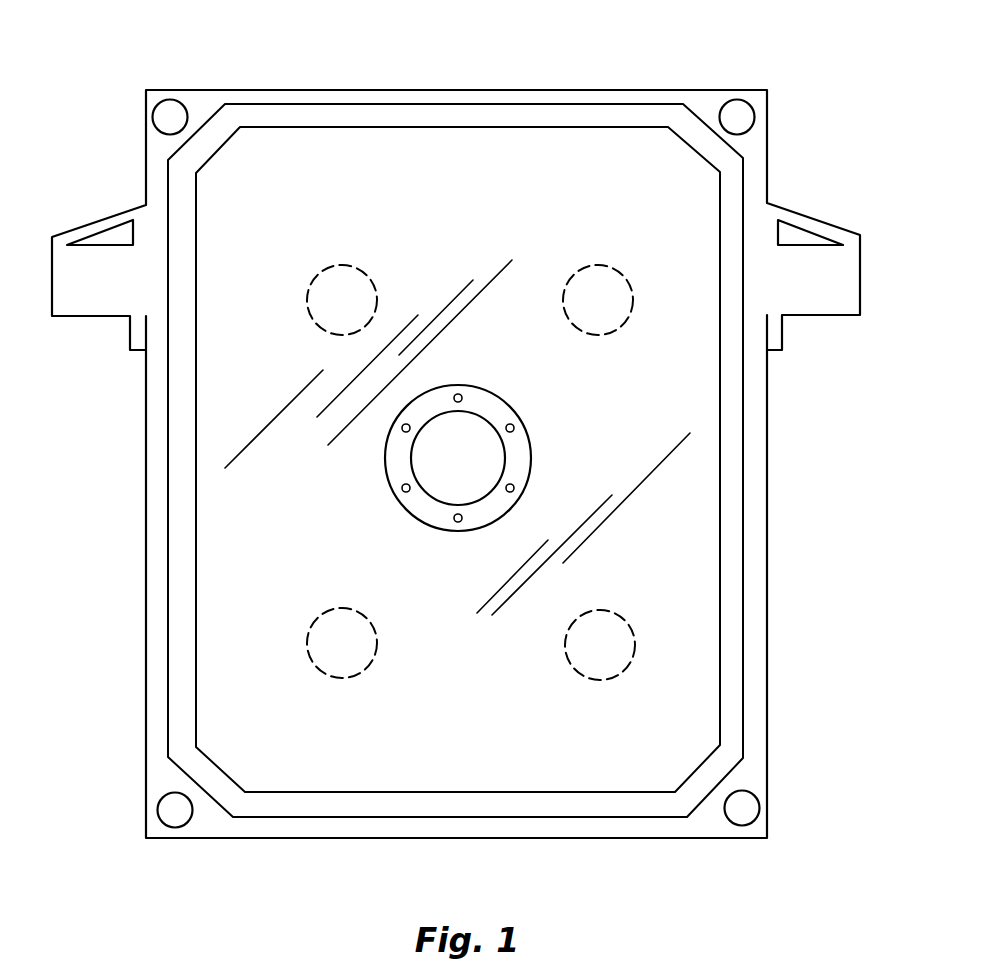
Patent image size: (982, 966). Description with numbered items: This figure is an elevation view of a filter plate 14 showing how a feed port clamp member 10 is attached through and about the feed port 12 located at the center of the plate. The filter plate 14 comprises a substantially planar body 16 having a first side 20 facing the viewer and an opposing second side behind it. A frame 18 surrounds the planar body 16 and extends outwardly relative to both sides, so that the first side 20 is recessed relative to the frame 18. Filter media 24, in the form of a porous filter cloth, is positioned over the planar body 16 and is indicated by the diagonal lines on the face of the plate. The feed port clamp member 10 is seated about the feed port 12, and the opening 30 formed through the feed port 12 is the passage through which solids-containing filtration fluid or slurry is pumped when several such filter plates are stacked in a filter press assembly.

The feed port clamp member 10 is at (522, 452).
The feed port 12 is at (442, 490).
The filter plate 14 is at (542, 143).
The planar body 16 is at (405, 160).
The frame 18 is at (635, 98).
The first side 20 is at (222, 375).
The filter media 24 is at (687, 555).
The opening 30 is at (444, 471).